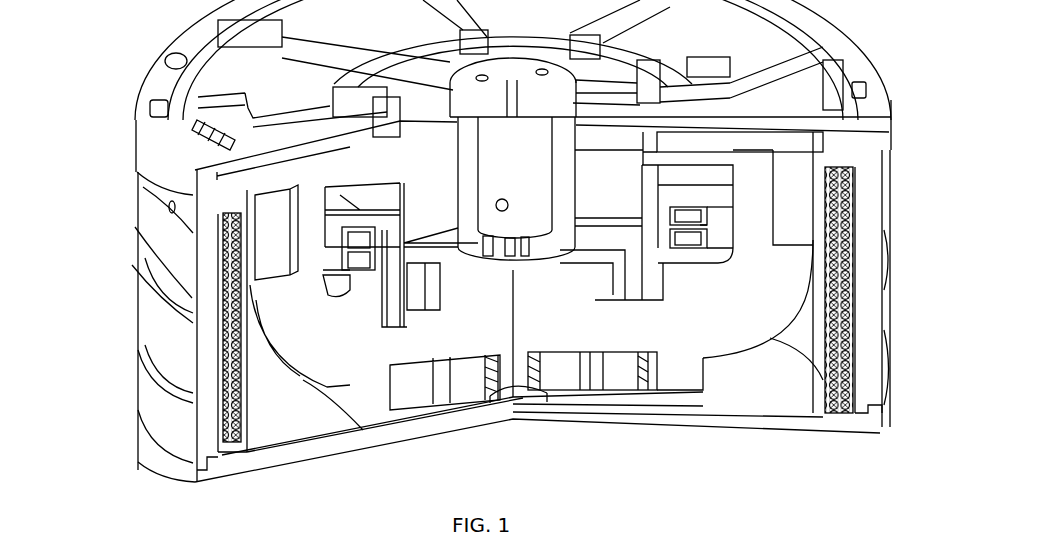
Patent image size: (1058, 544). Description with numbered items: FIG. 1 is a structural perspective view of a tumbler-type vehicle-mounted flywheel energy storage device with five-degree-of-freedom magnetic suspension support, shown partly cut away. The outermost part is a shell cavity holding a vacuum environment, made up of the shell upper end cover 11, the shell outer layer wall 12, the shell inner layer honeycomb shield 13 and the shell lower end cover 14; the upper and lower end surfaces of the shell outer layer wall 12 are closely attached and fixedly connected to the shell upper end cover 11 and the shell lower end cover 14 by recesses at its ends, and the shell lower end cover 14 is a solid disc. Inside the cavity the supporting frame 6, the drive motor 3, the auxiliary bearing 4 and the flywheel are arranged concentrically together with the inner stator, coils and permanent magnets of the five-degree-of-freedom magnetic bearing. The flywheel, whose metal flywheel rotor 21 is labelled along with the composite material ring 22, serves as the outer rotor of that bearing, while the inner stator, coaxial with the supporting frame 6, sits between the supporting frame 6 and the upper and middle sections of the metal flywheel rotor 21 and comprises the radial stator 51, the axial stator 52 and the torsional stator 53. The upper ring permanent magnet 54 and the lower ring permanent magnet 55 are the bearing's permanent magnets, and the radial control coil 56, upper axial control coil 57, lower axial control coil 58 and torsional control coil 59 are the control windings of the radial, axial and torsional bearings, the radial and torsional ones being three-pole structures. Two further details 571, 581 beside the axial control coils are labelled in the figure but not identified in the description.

The shell upper end cover 11 is at (268, 137).
The shell outer layer wall 12 is at (203, 393).
The shell inner layer honeycomb shield 13 is at (228, 432).
The shell lower end cover 14 is at (218, 471).
The supporting frame 6 is at (560, 137).
The radial stator 51 is at (343, 187).
The axial stator 52 is at (345, 282).
The torsional stator 53 is at (401, 308).
The upper ring permanent magnet 54 is at (391, 221).
The lower ring permanent magnet 55 is at (390, 261).
The radial control coil 56 is at (710, 142).
The upper axial control coil 57 is at (685, 218).
The lower axial control coil 58 is at (685, 241).
The torsional control coil 59 is at (652, 290).
The first clip 571 is at (704, 211).
The second clip 581 is at (705, 246).
The metal flywheel rotor 21 is at (722, 323).
The composite material ring 22 is at (803, 194).
The drive motor 3 is at (625, 373).
The auxiliary bearing 4 is at (534, 382).